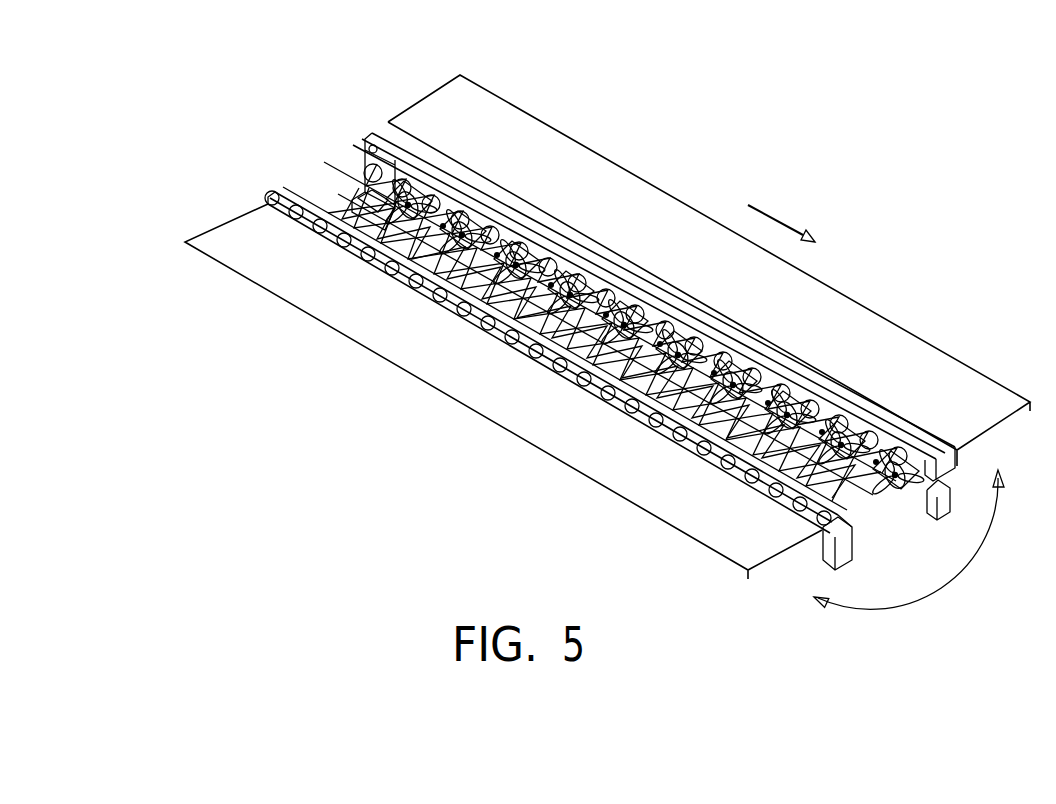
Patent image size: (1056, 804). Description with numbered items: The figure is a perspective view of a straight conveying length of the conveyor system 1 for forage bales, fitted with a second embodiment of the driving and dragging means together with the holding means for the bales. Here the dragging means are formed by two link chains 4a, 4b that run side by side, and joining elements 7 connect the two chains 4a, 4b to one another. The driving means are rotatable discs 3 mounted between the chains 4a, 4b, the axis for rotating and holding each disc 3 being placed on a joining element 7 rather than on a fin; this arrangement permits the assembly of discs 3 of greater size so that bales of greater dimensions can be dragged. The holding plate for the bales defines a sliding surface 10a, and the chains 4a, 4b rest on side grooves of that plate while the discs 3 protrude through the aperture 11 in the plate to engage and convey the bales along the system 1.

The conveyor system 1 is at (850, 167).
The rotatable discs 3 is at (767, 342).
The link chain 4a is at (285, 180).
The link chain 4b is at (425, 132).
The joining element 7 is at (652, 275).
The sliding surface 10a is at (550, 168).
The aperture 11 is at (355, 193).